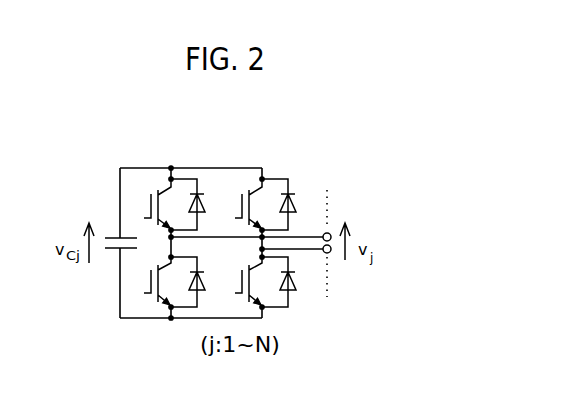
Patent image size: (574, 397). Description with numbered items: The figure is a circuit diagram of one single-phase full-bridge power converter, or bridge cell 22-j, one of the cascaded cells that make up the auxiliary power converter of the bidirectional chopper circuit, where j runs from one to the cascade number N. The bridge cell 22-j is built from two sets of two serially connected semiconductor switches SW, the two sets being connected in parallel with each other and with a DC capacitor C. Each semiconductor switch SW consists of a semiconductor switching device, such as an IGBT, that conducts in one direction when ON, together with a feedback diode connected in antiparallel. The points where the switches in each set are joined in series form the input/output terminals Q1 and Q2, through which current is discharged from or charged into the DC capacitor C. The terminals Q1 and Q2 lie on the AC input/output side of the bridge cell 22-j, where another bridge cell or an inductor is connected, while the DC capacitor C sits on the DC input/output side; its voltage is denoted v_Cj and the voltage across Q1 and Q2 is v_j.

The single-phase full-bridge power converter (bridge cell) 22-j is at (242, 150).
The semiconductor switch SW is at (150, 182).
The DC capacitor C is at (121, 257).
The input/output terminal Q1 is at (330, 233).
The input/output terminal Q2 is at (329, 253).